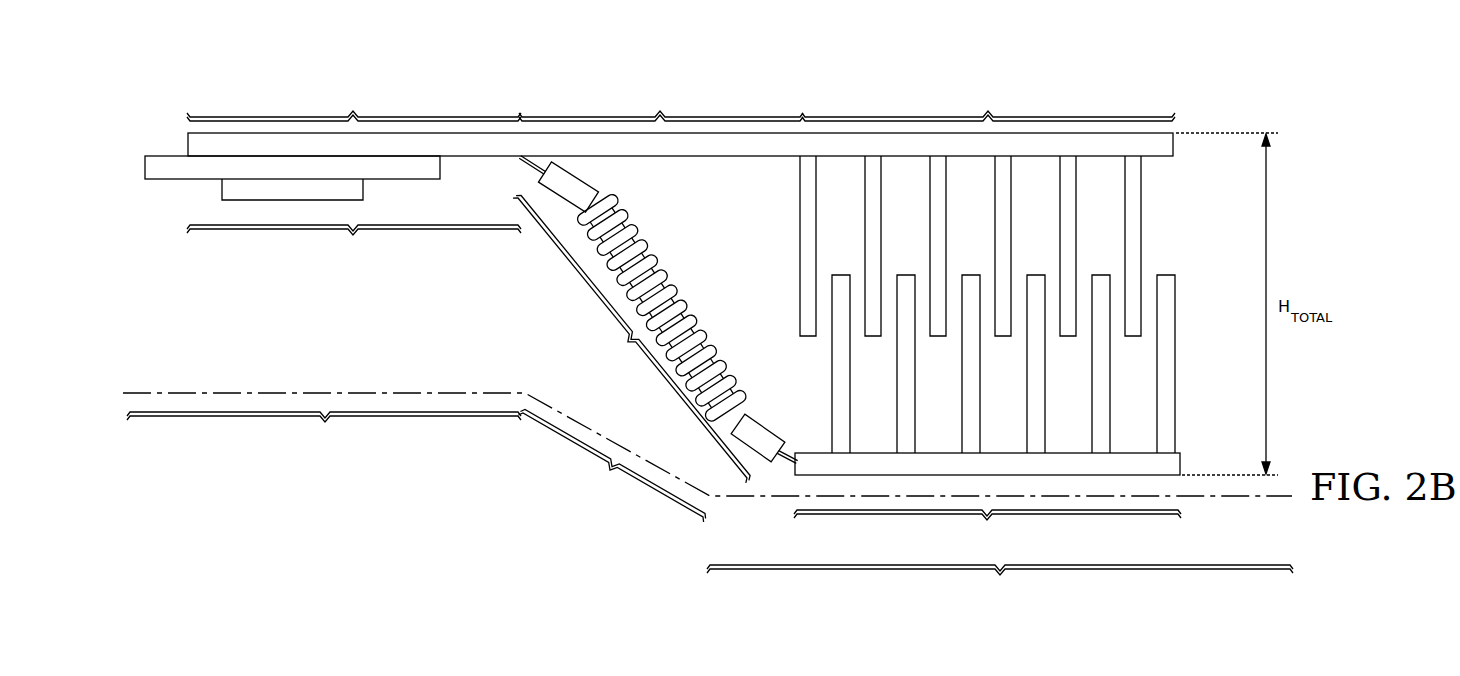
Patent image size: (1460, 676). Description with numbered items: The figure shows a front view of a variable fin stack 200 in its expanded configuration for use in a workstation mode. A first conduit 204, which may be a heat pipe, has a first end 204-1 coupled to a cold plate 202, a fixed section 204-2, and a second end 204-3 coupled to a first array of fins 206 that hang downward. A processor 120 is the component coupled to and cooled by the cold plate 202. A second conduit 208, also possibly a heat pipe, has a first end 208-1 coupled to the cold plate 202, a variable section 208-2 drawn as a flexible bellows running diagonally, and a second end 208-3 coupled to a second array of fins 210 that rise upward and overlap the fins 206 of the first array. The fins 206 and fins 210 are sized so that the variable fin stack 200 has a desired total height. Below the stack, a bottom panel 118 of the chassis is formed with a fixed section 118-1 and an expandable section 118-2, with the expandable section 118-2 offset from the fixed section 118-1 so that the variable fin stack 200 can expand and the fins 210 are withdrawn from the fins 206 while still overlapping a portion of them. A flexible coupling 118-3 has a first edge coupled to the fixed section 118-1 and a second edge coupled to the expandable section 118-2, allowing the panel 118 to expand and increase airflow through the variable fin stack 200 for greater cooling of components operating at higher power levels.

The variable fin stack 200 is at (494, 68).
The cold plate 202 is at (148, 168).
The first conduit 204 is at (197, 145).
The first end of first conduit 204-1 is at (354, 104).
The fixed section of first conduit 204-2 is at (661, 104).
The second end of first conduit 204-3 is at (988, 104).
The processor 120 is at (222, 189).
The first array of fins 206 is at (1141, 210).
The second conduit 208 is at (673, 292).
The first end of second conduit 208-1 is at (354, 244).
The variable section of second conduit 208-2 is at (631, 339).
The second end of second conduit 208-3 is at (987, 530).
The second array of fins 210 is at (1176, 397).
The bottom panel 118 is at (147, 386).
The fixed section of bottom panel 118-1 is at (324, 433).
The expandable section of bottom panel 118-2 is at (1000, 586).
The flexible coupling 118-3 is at (611, 466).